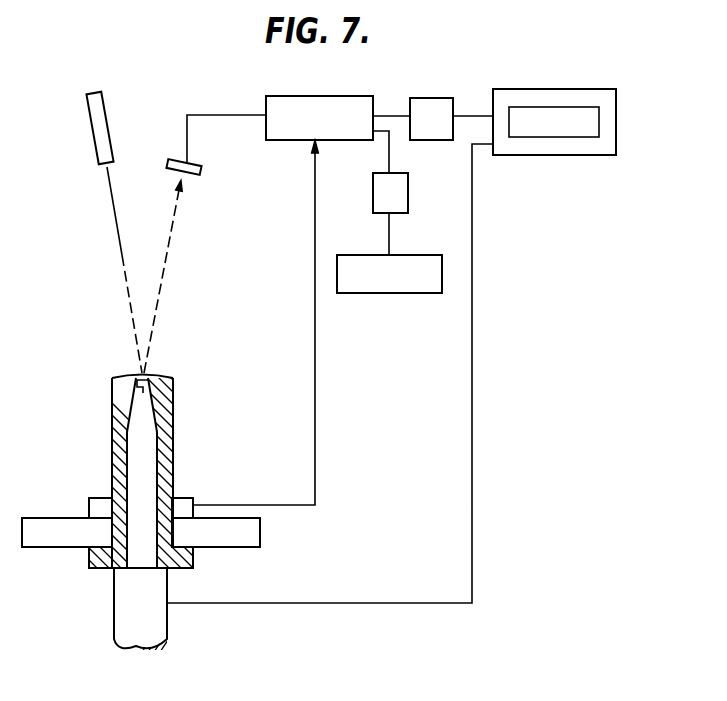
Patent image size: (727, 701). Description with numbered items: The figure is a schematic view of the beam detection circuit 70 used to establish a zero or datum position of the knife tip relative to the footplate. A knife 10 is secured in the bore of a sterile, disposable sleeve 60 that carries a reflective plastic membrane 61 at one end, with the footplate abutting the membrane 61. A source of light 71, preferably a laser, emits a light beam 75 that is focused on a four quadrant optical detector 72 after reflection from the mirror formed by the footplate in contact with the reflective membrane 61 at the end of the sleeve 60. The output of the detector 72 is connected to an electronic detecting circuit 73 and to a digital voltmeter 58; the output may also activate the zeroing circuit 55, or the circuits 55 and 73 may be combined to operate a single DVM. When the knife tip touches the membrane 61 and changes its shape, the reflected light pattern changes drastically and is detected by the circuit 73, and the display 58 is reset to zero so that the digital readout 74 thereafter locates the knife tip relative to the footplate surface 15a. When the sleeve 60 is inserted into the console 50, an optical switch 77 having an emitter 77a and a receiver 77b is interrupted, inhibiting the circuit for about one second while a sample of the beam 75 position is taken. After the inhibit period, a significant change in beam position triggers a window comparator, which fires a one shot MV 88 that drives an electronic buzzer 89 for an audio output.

The knife 10 is at (130, 607).
The footplate surface 15a is at (139, 373).
The console 50 is at (250, 528).
The zeroing circuit 55 is at (420, 98).
The digital voltmeter 58 is at (537, 89).
The sleeve 60 is at (177, 430).
The reflective plastic membrane 61 is at (159, 364).
The beam detection circuit 70 is at (370, 421).
The source of light 71 is at (113, 128).
The four quadrant optical detector 72 is at (200, 170).
The electronic detecting circuit 73 is at (342, 96).
The digital readout 74 is at (557, 137).
The light beam 75 is at (117, 235).
The optical switch 77 is at (125, 484).
The emitter 77a is at (97, 503).
The receiver 77b is at (180, 503).
The one shot MV 88 is at (409, 193).
The electronic buzzer 89 is at (420, 293).